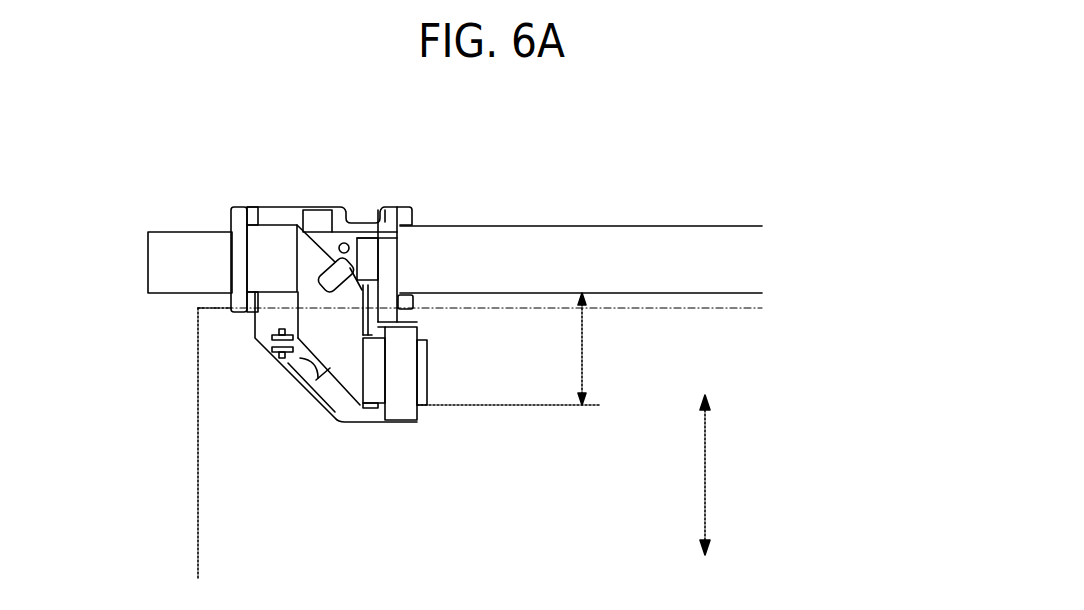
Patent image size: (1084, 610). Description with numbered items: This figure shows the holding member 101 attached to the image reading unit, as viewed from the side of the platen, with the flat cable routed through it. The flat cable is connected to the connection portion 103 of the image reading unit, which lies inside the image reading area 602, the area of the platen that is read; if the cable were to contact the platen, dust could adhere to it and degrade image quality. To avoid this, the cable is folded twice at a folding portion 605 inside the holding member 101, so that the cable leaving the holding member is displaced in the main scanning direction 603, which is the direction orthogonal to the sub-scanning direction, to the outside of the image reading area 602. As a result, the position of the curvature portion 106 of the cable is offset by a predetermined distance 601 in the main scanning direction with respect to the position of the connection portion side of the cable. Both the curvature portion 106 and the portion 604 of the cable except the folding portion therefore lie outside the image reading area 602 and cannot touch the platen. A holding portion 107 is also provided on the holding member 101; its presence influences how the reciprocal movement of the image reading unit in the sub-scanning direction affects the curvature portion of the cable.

The holding member 101 is at (322, 188).
The connection portion 103 is at (425, 383).
The curvature portion 106 is at (157, 260).
The holding portion 107 is at (236, 218).
The predetermined distance 601 is at (585, 352).
The image reading area 602 is at (197, 459).
The main scanning direction 603 is at (706, 469).
The portion except a folding portion 604 is at (548, 243).
The folding portion 605 is at (330, 342).